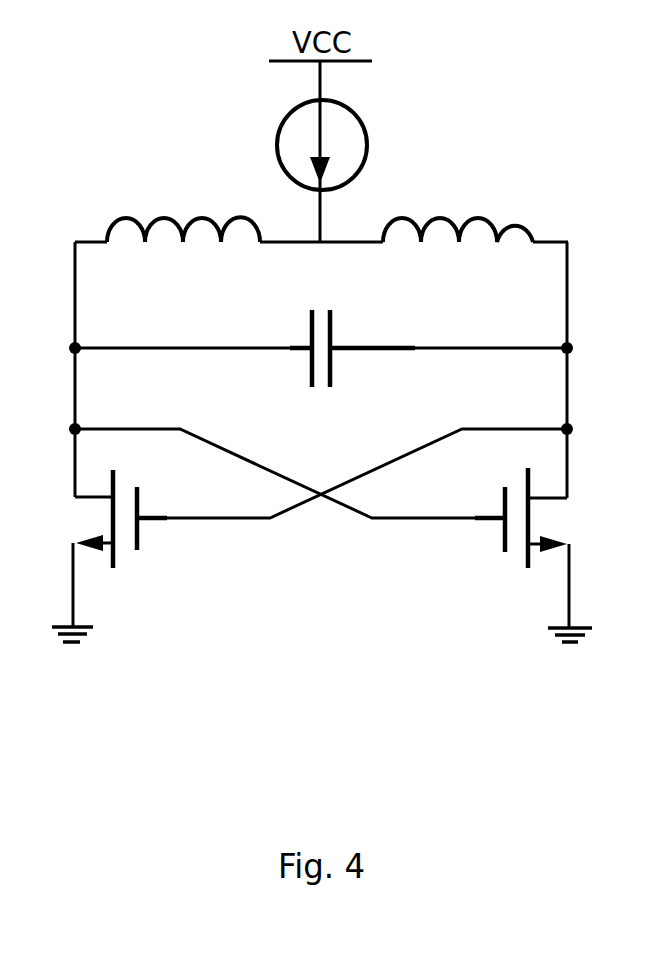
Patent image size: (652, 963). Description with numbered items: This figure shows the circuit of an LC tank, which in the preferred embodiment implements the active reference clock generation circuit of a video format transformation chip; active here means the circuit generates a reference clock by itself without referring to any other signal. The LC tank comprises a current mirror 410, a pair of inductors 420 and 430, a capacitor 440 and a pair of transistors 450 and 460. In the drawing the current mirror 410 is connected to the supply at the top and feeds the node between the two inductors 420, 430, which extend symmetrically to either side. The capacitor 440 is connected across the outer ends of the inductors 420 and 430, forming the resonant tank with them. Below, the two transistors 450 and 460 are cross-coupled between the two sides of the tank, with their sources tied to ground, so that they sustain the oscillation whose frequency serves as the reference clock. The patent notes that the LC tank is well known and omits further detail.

The current mirror 410 is at (380, 138).
The inductor 420 is at (112, 205).
The inductor 430 is at (535, 207).
The capacitor 440 is at (350, 375).
The transistor 450 is at (165, 585).
The transistor 460 is at (475, 585).